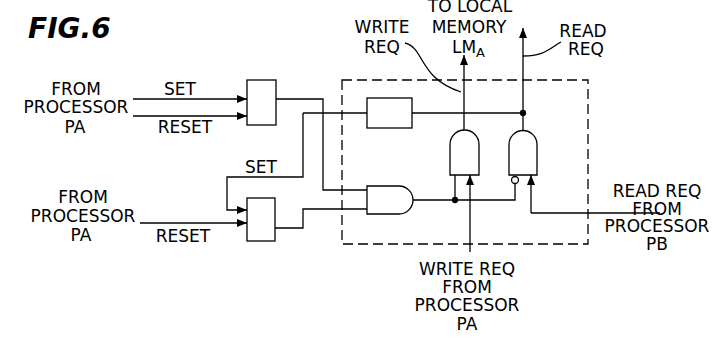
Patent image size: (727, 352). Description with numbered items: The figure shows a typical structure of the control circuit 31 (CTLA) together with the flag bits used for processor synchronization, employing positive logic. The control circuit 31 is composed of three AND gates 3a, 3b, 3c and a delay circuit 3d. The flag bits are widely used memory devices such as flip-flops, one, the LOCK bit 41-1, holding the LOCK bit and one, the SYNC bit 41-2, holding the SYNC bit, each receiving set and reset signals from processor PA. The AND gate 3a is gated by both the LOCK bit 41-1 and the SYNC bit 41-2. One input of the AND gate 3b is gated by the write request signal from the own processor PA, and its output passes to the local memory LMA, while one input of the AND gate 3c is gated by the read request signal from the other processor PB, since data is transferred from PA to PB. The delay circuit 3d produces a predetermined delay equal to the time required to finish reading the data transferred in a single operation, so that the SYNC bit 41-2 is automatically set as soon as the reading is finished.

The LOCK bit flip-flop 41-1 is at (276, 83).
The SYNC bit flip-flop 41-2 is at (268, 243).
The control circuit 31 is at (588, 142).
The AND gate 3a is at (398, 186).
The AND gate 3b is at (447, 153).
The AND gate 3c is at (538, 156).
The delay circuit 3d is at (386, 98).